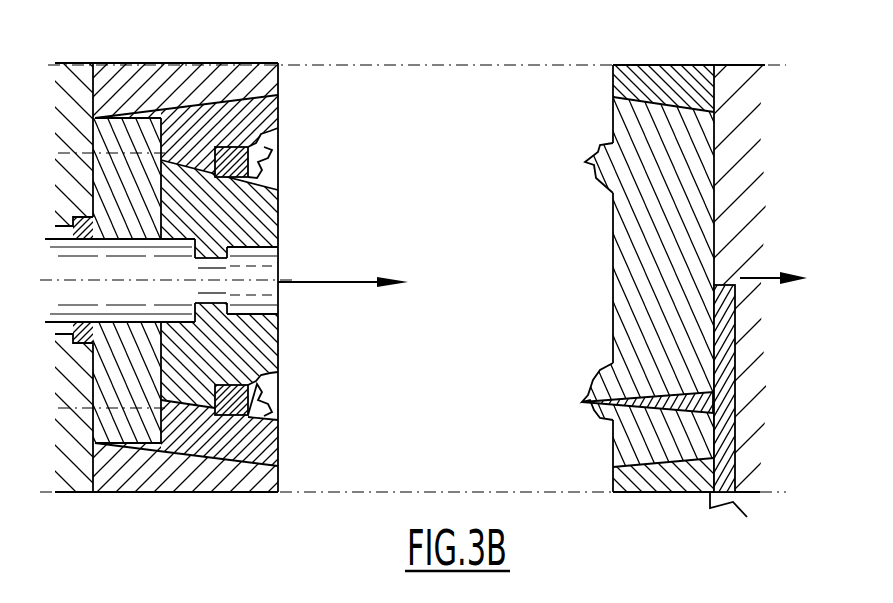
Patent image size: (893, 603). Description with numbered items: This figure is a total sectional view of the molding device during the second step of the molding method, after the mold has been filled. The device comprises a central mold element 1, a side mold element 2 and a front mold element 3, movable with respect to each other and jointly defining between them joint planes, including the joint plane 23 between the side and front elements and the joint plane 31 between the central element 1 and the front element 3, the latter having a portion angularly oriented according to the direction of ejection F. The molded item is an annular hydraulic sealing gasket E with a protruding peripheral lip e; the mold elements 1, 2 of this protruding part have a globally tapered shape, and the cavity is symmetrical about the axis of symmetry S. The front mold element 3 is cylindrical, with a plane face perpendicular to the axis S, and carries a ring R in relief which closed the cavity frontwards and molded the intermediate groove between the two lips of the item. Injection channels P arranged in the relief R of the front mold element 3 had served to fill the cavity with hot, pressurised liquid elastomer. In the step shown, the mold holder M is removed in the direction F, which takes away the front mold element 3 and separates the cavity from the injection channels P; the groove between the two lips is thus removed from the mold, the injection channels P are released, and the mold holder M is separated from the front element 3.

The central mold element 1 is at (253, 220).
The side mold element 2 is at (195, 137).
The joint plane 31 is at (220, 416).
The joint plane 23 is at (303, 133).
The hydraulic sealing gasket E is at (227, 163).
The peripheral lip e is at (246, 451).
The axis of symmetry S is at (343, 261).
The mold holder M is at (733, 103).
The ring in relief R is at (593, 158).
The injection channels P is at (647, 466).
The front mold element 3 is at (744, 278).
The direction of ejection F is at (773, 258).